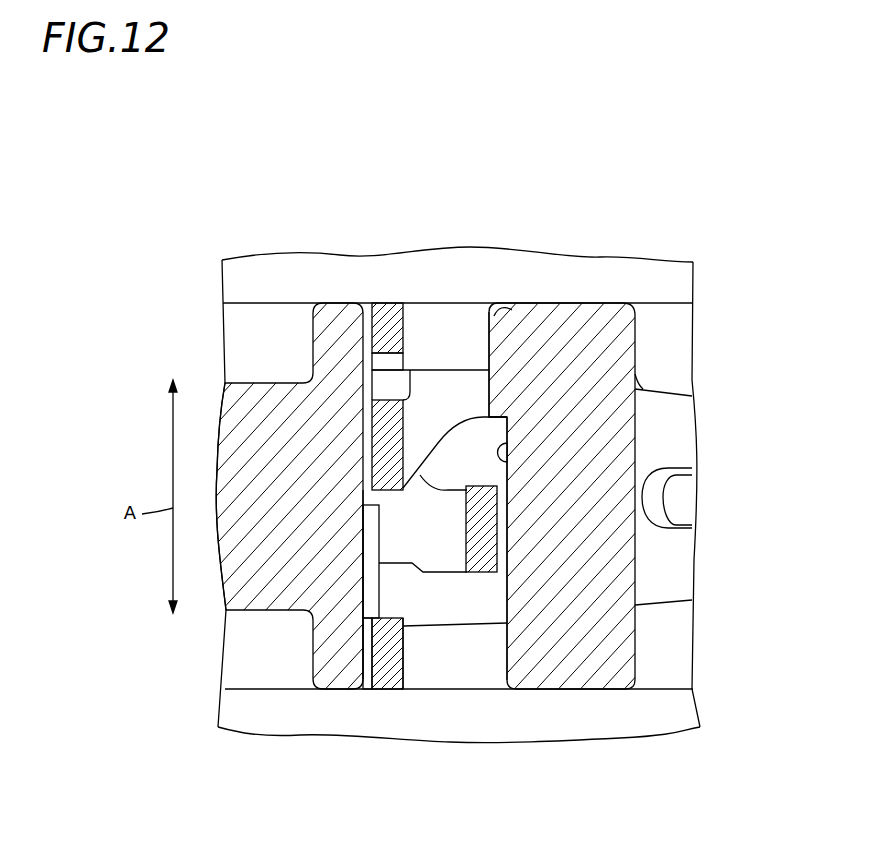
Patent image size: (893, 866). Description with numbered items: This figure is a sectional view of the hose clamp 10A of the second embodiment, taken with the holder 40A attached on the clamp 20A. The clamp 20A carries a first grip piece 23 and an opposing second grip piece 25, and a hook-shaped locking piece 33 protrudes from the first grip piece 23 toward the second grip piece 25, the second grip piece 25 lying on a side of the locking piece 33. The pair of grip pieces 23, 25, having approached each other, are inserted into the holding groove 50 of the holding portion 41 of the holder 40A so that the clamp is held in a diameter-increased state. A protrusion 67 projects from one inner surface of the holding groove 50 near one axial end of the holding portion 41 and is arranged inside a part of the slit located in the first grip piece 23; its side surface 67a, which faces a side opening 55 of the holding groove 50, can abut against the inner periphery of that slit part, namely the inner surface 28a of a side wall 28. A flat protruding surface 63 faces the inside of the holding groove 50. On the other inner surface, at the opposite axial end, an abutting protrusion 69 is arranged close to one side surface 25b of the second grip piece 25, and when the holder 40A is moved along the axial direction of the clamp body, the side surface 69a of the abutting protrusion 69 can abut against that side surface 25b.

The hose clamp 10A is at (255, 257).
The clamp 20A is at (657, 302).
The holder 40A is at (608, 688).
The holding portion 41 is at (635, 334).
The first grip piece 23 is at (384, 298).
The side wall 28 is at (397, 305).
The inner surface of side wall 28a is at (402, 625).
The holding groove 50 is at (429, 301).
The locking piece 33 is at (402, 428).
The side opening 55 is at (481, 303).
The abutting protrusion 69 is at (494, 405).
The side surface of abutting protrusion 69a is at (500, 410).
The second grip piece 25 is at (477, 575).
The side surface of second grip piece 25b is at (483, 483).
The protruding surface 63 is at (380, 590).
The protrusion 67 is at (367, 600).
The side surface of protrusion 67a is at (340, 618).